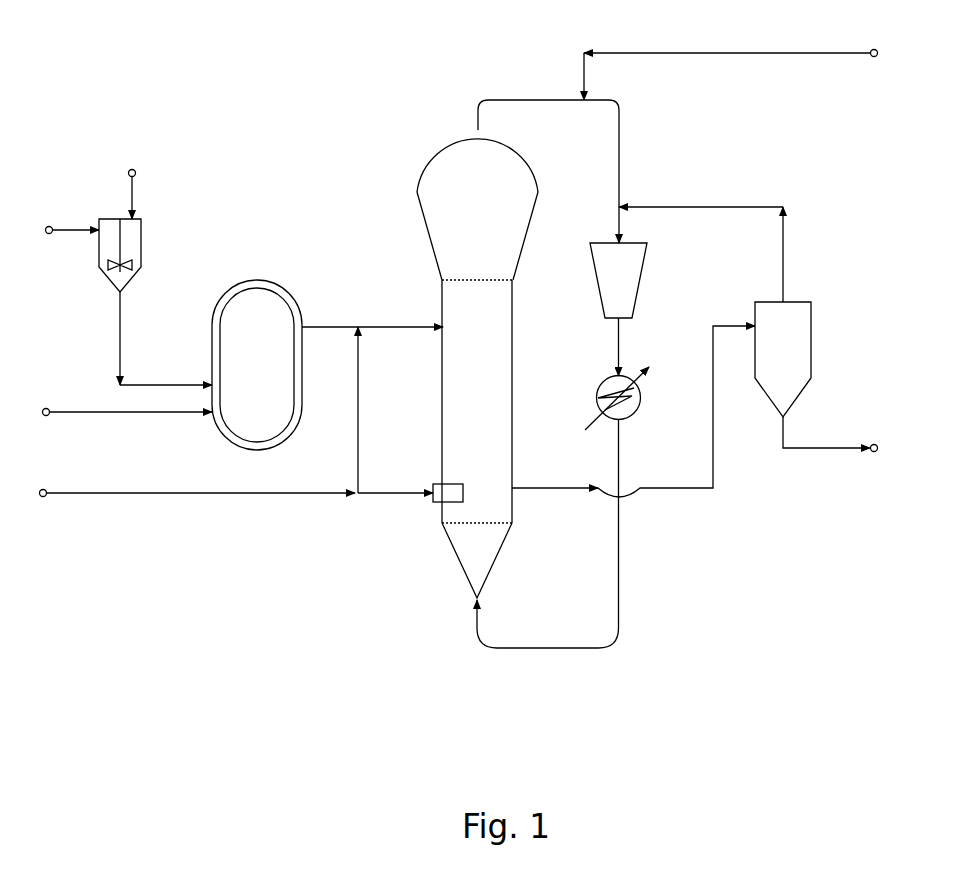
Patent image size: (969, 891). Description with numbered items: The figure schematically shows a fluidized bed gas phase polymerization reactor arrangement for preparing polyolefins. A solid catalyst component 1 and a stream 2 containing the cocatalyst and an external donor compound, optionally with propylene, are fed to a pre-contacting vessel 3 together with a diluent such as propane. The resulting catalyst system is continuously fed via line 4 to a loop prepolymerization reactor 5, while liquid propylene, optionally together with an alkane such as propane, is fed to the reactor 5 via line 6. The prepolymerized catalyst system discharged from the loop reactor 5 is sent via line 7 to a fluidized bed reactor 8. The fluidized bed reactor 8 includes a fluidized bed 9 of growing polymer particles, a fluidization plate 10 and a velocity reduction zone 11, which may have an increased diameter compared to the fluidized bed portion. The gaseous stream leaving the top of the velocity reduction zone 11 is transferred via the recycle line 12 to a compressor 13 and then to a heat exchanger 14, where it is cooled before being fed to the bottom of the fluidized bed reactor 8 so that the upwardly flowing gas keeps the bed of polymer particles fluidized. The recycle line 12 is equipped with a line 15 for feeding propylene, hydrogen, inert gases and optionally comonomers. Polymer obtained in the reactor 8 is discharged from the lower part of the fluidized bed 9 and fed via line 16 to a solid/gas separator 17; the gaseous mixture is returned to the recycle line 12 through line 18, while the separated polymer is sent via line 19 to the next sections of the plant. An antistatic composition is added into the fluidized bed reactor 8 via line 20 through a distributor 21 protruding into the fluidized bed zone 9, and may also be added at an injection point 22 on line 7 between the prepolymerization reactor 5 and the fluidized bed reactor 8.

The solid catalyst component 1 is at (68, 230).
The stream containing the cocatalyst and an external donor compound 2 is at (130, 205).
The pre-contacting vessel 3 is at (143, 240).
The line 4 is at (120, 345).
The loop prepolymerization reactor 5 is at (226, 306).
The line 6 is at (68, 412).
The line 7 is at (403, 327).
The fluidized bed reactor 8 is at (441, 140).
The fluidized bed 9 is at (462, 405).
The fluidization plate 10 is at (498, 523).
The velocity reduction zone 11 is at (463, 203).
The recycle line 12 is at (618, 157).
The compressor 13 is at (616, 271).
The heat exchanger 14 is at (641, 404).
The line 15 is at (697, 53).
The line 16 is at (556, 488).
The solid/gas separator 17 is at (786, 338).
The line 18 is at (681, 207).
The line 19 is at (822, 448).
The line 20 is at (402, 492).
The distributor 21 is at (453, 483).
The injection point 22 is at (358, 362).